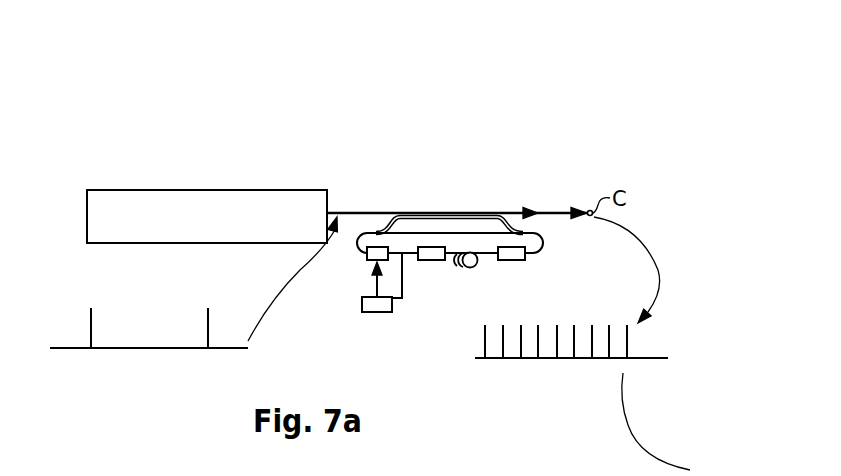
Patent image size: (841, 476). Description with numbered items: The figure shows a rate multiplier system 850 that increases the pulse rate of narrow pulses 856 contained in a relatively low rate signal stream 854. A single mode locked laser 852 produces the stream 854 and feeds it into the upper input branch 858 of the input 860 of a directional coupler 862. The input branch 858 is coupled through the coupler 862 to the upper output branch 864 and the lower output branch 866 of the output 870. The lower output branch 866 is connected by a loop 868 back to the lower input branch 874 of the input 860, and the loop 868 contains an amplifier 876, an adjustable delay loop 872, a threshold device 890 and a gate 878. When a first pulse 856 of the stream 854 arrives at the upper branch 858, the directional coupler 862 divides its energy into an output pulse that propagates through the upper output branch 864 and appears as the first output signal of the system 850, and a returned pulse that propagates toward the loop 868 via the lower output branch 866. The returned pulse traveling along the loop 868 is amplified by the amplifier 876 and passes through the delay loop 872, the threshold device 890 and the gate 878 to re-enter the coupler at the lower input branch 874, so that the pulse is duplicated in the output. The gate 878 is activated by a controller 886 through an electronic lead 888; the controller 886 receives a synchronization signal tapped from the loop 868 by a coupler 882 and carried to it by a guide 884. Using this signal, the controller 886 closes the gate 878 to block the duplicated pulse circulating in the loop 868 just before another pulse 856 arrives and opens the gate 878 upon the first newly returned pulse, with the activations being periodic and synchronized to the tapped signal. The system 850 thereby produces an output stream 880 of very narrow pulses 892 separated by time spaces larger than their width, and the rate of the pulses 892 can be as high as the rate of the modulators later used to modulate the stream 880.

The system 850 is at (520, 25).
The mode locked laser 852 is at (233, 190).
The signal stream 854 is at (172, 347).
The pulse 856 is at (207, 320).
The upper input branch 858 is at (393, 212).
The input 860 is at (381, 207).
The directional coupler 862 is at (441, 200).
The upper output branch 864 is at (528, 210).
The lower output branch 866 is at (546, 216).
The loop 868 is at (483, 278).
The output 870 is at (530, 208).
The adjustable delay loop 872 is at (467, 268).
The lower input branch 874 is at (370, 203).
The amplifier 876 is at (513, 262).
The gate 878 is at (367, 261).
The output stream 880 is at (560, 359).
The coupler 882 is at (404, 268).
The guide 884 is at (401, 301).
The controller 886 is at (362, 311).
The electronic lead 888 is at (362, 303).
The threshold device 890 is at (449, 270).
The output pulses 892 is at (631, 347).